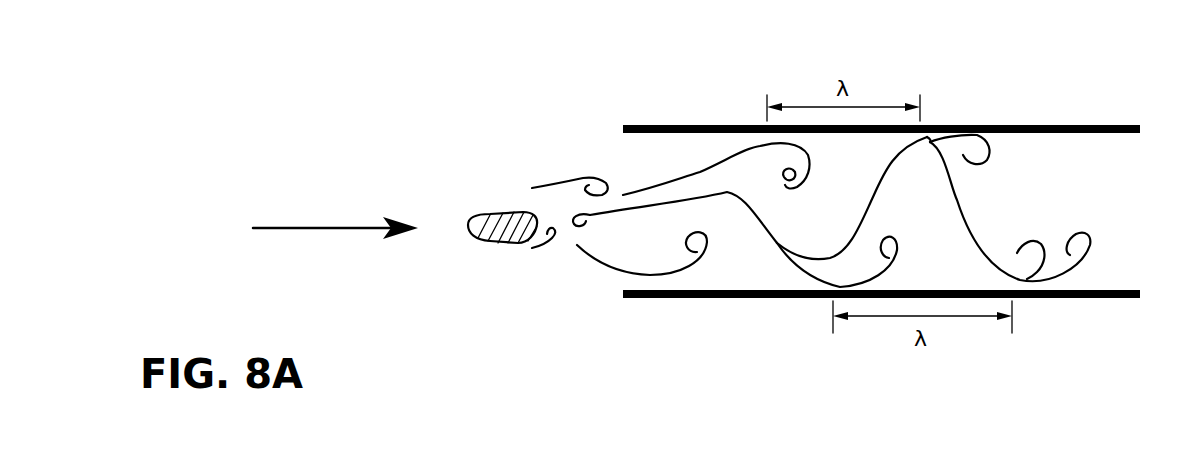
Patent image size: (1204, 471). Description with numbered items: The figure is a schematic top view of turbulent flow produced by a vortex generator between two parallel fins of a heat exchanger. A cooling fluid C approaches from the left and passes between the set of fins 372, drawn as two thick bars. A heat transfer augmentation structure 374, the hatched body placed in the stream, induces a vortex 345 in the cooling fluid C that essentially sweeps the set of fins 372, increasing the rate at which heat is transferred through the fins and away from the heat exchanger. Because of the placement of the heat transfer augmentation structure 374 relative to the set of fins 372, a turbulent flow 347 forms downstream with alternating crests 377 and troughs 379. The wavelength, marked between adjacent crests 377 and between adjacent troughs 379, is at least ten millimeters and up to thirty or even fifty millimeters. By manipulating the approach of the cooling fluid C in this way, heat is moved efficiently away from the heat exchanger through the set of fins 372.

The set of fins 372 is at (650, 125).
The vortex 345 is at (785, 185).
The heat transfer augmentation structure 374 is at (498, 220).
The crest 377 is at (930, 142).
The turbulent flow 347 is at (758, 220).
The trough 379 is at (830, 256).
The cooling fluid C is at (340, 228).